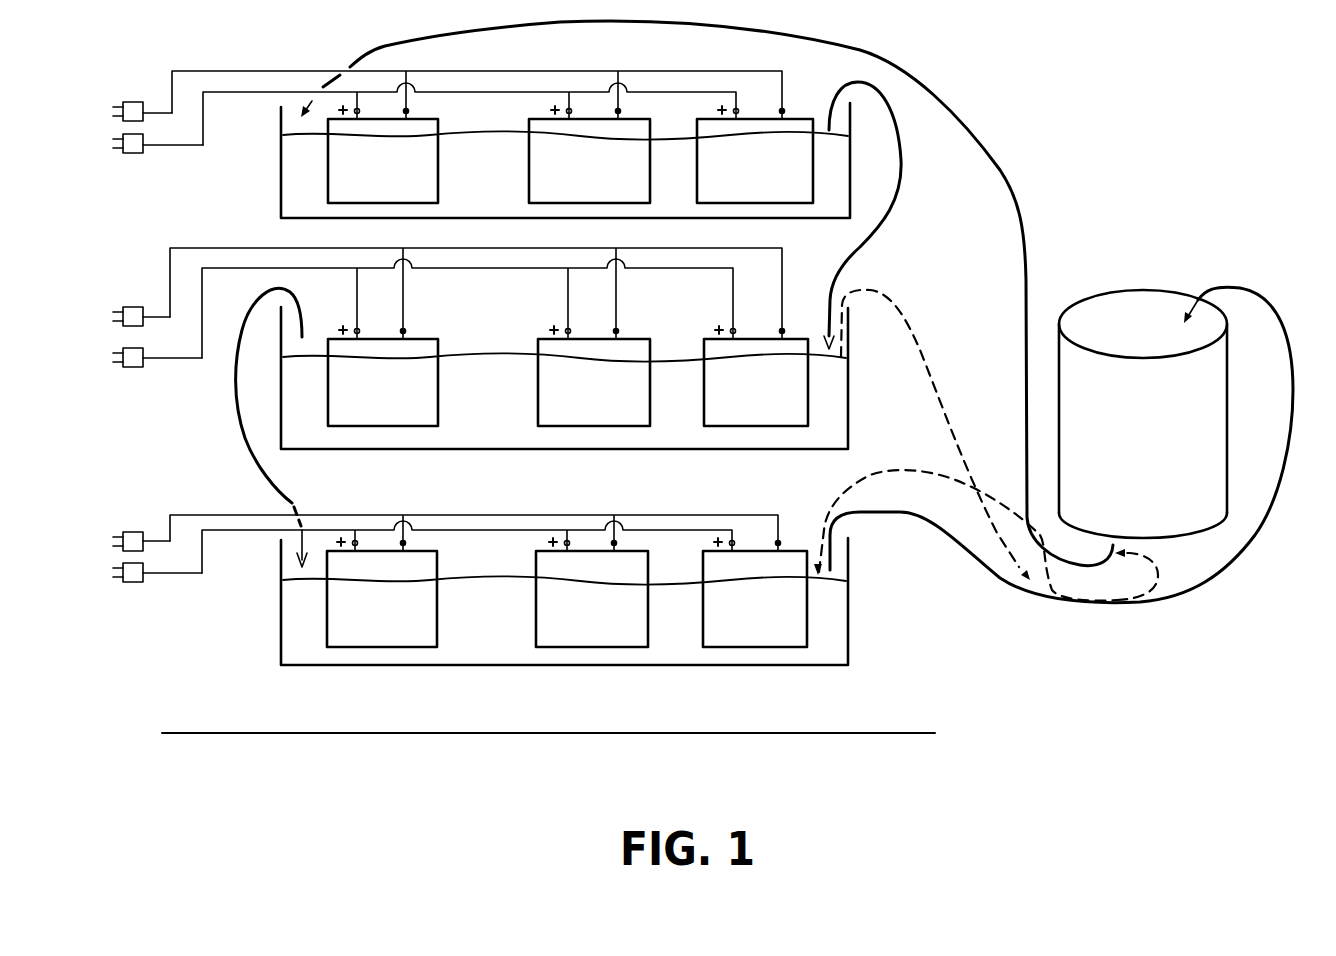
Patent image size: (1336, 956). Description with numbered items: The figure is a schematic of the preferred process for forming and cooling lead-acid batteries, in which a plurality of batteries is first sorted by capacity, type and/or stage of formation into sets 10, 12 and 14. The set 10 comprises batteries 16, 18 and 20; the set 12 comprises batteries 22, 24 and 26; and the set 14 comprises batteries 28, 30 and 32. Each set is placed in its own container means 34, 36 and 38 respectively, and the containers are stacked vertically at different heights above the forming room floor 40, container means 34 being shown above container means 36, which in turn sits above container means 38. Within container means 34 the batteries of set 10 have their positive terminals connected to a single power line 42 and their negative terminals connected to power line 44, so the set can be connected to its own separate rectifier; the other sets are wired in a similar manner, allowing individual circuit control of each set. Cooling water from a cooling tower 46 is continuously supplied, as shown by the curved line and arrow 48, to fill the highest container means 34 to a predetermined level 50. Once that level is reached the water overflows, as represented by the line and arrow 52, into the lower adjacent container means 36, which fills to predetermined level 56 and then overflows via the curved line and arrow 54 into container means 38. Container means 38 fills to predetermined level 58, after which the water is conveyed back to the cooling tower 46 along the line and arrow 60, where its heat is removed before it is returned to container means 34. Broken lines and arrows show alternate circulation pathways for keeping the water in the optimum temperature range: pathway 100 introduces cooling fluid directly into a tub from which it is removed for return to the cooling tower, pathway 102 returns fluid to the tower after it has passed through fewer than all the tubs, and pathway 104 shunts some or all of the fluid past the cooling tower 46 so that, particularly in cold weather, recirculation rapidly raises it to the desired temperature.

The battery set 10 is at (527, 164).
The battery set 12 is at (596, 401).
The battery set 14 is at (535, 618).
The battery 16 is at (438, 170).
The battery 18 is at (528, 150).
The battery 20 is at (697, 170).
The battery 22 is at (438, 400).
The battery 24 is at (537, 397).
The battery 26 is at (704, 393).
The battery 28 is at (437, 595).
The battery 30 is at (536, 622).
The battery 32 is at (703, 616).
The container means 34 is at (280, 207).
The container means 36 is at (515, 450).
The container means 38 is at (527, 665).
The forming room floor 40 is at (878, 733).
The power line 42 is at (257, 92).
The power line 44 is at (237, 71).
The cooling tower 46 is at (1152, 288).
The curved line and arrow 48 is at (1023, 207).
The predetermined level 50 is at (298, 135).
The line and arrow 52 is at (902, 200).
The curved line and arrow 54 is at (243, 440).
The predetermined level 56 is at (510, 322).
The predetermined level 58 is at (488, 578).
The line and arrow 60 is at (1177, 603).
The pathway 100 is at (825, 498).
The pathway 102 is at (923, 353).
The pathway 104 is at (1153, 573).